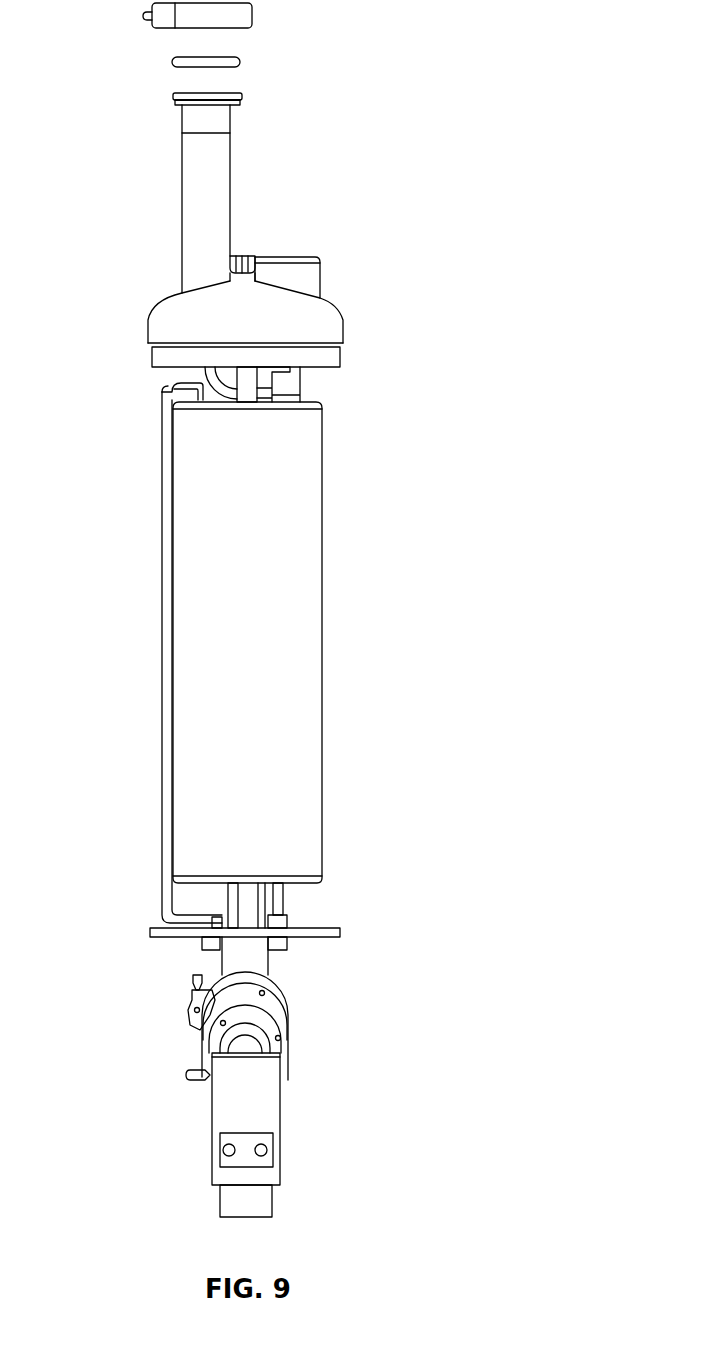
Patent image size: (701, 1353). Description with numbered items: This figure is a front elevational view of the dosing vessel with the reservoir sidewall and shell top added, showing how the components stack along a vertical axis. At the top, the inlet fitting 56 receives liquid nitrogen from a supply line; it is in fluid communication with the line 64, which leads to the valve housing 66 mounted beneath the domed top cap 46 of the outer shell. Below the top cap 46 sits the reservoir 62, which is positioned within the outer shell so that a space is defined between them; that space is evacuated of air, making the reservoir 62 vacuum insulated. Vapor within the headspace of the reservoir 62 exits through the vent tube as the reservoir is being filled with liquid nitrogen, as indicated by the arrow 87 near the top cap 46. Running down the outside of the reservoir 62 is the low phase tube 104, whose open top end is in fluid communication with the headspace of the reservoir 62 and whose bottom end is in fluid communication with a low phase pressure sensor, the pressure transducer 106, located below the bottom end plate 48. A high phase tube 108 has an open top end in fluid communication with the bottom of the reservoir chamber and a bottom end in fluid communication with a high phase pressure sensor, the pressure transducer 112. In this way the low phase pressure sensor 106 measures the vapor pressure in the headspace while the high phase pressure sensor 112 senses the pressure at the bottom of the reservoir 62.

The top cap 46 is at (343, 312).
The bottom end plate 48 is at (312, 937).
The inlet fitting 56 is at (182, 178).
The reservoir 62 is at (320, 520).
The line 64 is at (166, 386).
The valve housing 66 is at (303, 378).
The arrow 87 is at (320, 272).
The low phase tube 104 is at (162, 488).
The low phase pressure sensor 106 is at (202, 942).
The high phase tube 108 is at (287, 905).
The high phase pressure sensor 112 is at (280, 952).